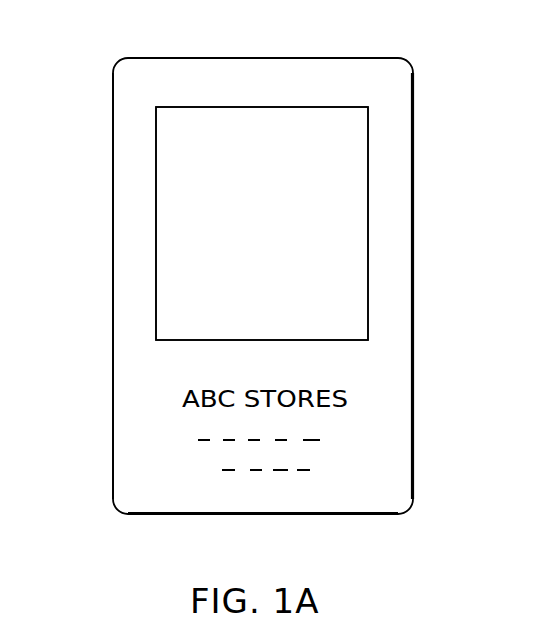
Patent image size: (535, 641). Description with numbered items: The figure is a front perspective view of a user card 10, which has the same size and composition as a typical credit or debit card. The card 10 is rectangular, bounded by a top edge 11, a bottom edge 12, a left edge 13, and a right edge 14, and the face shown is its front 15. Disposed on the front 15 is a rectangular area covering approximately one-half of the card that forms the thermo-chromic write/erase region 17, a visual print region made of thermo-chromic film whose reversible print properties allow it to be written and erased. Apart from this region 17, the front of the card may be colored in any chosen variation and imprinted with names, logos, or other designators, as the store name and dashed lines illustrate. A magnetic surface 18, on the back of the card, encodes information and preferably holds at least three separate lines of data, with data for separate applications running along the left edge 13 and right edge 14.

The user card 10 is at (134, 29).
The top edge 11 is at (328, 58).
The bottom edge 12 is at (332, 517).
The left edge 13 is at (112, 285).
The right edge 14 is at (414, 281).
The front 15 is at (280, 247).
The thermo-chromic write/erase region 17 is at (347, 168).
The magnetic surface 18 is at (524, 471).